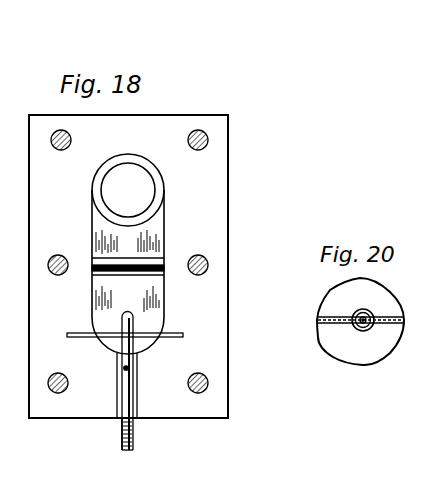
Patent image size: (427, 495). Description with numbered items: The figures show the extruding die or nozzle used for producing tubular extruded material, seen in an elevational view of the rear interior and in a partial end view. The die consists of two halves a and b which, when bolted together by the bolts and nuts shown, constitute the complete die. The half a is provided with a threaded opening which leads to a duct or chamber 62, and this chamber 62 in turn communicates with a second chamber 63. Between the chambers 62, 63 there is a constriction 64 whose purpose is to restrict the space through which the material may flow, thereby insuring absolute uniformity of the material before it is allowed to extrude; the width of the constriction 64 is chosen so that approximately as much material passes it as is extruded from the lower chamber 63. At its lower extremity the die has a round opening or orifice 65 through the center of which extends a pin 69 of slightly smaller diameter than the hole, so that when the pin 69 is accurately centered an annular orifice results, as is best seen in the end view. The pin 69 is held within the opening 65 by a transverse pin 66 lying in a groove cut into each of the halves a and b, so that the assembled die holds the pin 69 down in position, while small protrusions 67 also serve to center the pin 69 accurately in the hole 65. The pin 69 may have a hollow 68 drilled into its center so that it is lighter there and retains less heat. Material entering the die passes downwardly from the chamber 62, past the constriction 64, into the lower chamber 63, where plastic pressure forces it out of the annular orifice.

In FIG. 18, the die half a is at (222, 221).
In FIG. 20, the die half a is at (325, 333).
In FIG. 20, the die half b is at (390, 302).
In FIG. 18, the duct or chamber 62 is at (92, 219).
In FIG. 18, the second chamber 63 is at (157, 301).
In FIG. 18, the constriction 64 is at (152, 261).
In FIG. 18, the orifice 65 is at (134, 424).
In FIG. 20, the orifice 65 is at (372, 327).
In FIG. 18, the transverse pin 66 is at (183, 336).
In FIG. 20, the transverse pin 66 is at (332, 316).
In FIG. 18, the protrusions 67 is at (128, 368).
In FIG. 20, the protrusions 67 is at (362, 322).
In FIG. 18, the hollow 68 is at (128, 448).
In FIG. 18, the pin 69 is at (121, 430).
In FIG. 20, the pin 69 is at (357, 311).